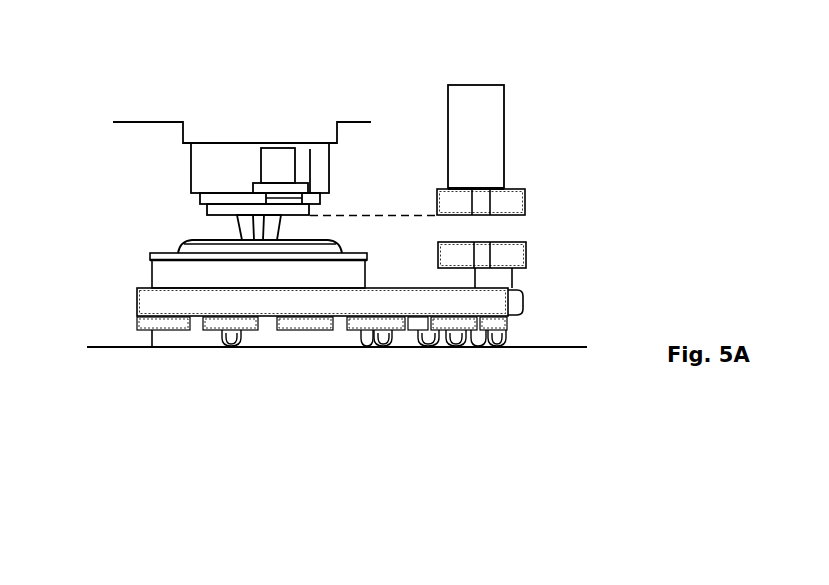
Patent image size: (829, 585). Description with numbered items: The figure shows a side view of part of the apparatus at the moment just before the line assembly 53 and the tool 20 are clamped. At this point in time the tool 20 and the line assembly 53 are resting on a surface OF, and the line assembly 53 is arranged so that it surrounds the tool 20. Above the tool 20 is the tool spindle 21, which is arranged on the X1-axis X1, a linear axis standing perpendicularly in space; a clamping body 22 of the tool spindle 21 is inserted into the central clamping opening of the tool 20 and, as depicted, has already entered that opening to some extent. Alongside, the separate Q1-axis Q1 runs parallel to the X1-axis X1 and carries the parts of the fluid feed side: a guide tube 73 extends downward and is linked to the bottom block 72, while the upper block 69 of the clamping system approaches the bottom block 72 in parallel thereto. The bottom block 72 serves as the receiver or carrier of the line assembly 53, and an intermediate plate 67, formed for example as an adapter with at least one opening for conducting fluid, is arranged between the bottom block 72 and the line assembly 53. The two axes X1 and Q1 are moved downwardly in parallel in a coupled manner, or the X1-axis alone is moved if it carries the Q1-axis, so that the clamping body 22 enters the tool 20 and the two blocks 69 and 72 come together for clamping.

The tool 20 is at (158, 272).
The tool spindle 21 is at (197, 160).
The clamping body 22 is at (245, 223).
The line assembly 53 is at (490, 306).
The intermediate plate 67 is at (508, 278).
The upper block 69 is at (515, 198).
The bottom block 72 is at (517, 248).
The guide tube 73 is at (489, 108).
The surface OF is at (88, 347).
The X1-axis X1 is at (263, 17).
The Q1-axis Q1 is at (478, 12).